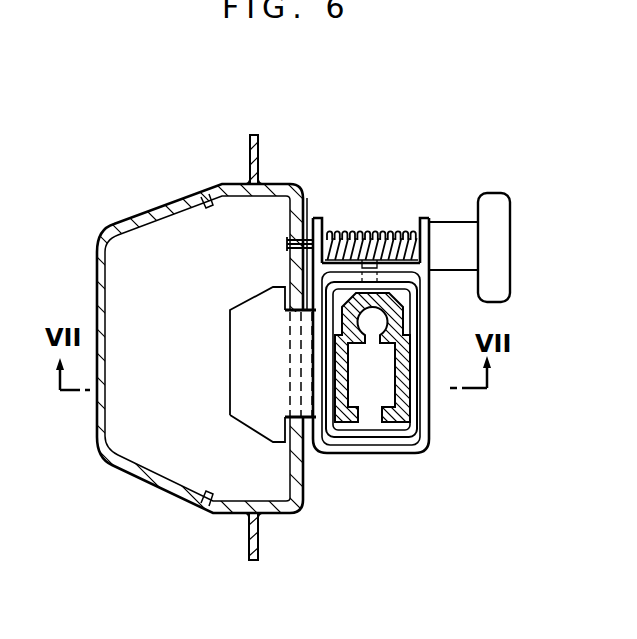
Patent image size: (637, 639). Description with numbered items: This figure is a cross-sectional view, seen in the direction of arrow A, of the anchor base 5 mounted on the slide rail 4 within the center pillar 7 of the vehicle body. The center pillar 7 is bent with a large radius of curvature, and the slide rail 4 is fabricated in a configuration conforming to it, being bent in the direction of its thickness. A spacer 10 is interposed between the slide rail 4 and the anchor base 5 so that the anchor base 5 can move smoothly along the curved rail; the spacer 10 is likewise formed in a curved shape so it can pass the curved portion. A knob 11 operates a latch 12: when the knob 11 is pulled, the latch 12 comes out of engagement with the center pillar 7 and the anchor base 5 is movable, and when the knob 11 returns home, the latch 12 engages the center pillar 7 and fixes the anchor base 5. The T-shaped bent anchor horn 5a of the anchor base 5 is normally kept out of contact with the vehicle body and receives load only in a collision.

The slide rail 4 is at (380, 418).
The anchor base 5 is at (418, 428).
The anchor horn 5a is at (238, 416).
The center pillar 7 is at (110, 468).
The spacer 10 is at (415, 318).
The knob 11 is at (493, 224).
The latch 12 is at (287, 244).